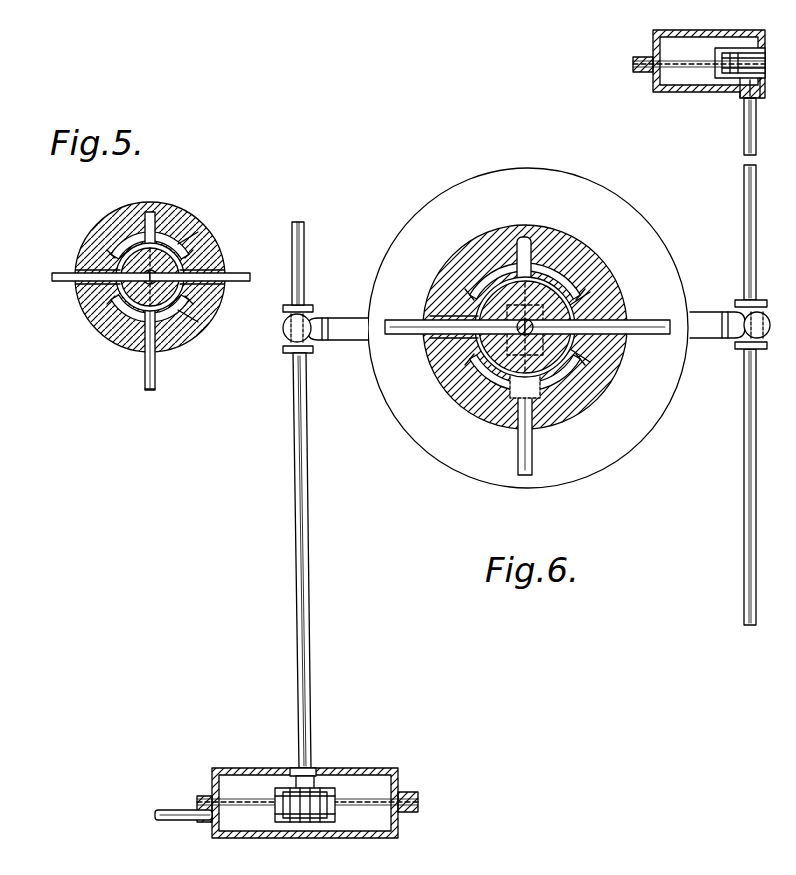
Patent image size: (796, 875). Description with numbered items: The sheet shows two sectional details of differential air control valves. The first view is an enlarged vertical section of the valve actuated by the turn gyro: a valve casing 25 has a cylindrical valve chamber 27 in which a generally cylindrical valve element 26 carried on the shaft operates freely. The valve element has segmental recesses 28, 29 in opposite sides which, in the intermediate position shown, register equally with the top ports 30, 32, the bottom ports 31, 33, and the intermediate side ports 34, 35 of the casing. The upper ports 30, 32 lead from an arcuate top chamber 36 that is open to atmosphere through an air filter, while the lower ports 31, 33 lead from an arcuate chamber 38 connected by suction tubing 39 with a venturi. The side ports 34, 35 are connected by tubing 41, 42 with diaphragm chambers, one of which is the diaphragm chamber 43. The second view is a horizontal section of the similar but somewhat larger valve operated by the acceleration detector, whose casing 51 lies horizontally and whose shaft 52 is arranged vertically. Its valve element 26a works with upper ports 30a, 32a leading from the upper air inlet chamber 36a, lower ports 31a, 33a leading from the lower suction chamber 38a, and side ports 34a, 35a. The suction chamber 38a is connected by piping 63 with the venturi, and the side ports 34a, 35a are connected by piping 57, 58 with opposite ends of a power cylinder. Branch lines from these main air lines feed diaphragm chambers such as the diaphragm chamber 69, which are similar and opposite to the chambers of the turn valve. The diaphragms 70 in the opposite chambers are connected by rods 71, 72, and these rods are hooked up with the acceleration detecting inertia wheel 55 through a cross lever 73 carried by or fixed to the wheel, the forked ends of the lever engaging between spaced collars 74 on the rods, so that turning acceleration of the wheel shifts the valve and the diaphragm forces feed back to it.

In FIG. 5, the valve casing 25 is at (133, 207).
In FIG. 5, the cylindrical valve element 26 is at (128, 292).
In FIG. 5, the cylindrical valve chamber 27 is at (200, 262).
In FIG. 5, the segmental recess 28 is at (125, 262).
In FIG. 6, the segmental recess 28 is at (525, 327).
In FIG. 5, the segmental recess 29 is at (185, 300).
In FIG. 5, the top port 30 is at (125, 250).
In FIG. 5, the bottom port 31 is at (127, 320).
In FIG. 5, the top port 32 is at (190, 235).
In FIG. 5, the bottom port 33 is at (183, 320).
In FIG. 5, the intermediate side port 34 is at (84, 298).
In FIG. 5, the intermediate side port 35 is at (200, 288).
In FIG. 5, the arcuate top chamber 36 is at (168, 214).
In FIG. 5, the arcuate chamber 38 is at (141, 352).
In FIG. 5, the suction tubing 39 is at (156, 380).
In FIG. 5, the tubing 41 is at (53, 281).
In FIG. 6, the tubing 41 is at (165, 810).
In FIG. 5, the tubing 42 is at (235, 273).
In FIG. 6, the diaphragm chamber 43 is at (252, 832).
In FIG. 6, the casing 51 is at (567, 275).
In FIG. 6, the shaft 52 is at (560, 335).
In FIG. 6, the acceleration detecting inertia wheel 55 is at (538, 172).
In FIG. 6, the piping 57 is at (402, 336).
In FIG. 6, the piping 58 is at (648, 336).
In FIG. 6, the piping 63 is at (525, 462).
In FIG. 6, the diaphragm chamber 69 is at (655, 42).
In FIG. 6, the diaphragm 70 is at (680, 60).
In FIG. 6, the rod 71 is at (307, 538).
In FIG. 6, the rod 72 is at (744, 465).
In FIG. 6, the cross lever 73 is at (356, 318).
In FIG. 6, the spaced collars 74 is at (285, 349).
In FIG. 6, the cylindrical valve element 26a is at (480, 310).
In FIG. 6, the top port 30a is at (490, 262).
In FIG. 6, the bottom port 31a is at (490, 365).
In FIG. 6, the top port 32a is at (585, 298).
In FIG. 6, the bottom port 33a is at (570, 362).
In FIG. 6, the side port 34a is at (470, 352).
In FIG. 6, the side port 35a is at (600, 318).
In FIG. 6, the upper air inlet chamber 36a is at (547, 250).
In FIG. 6, the lower suction chamber 38a is at (505, 398).